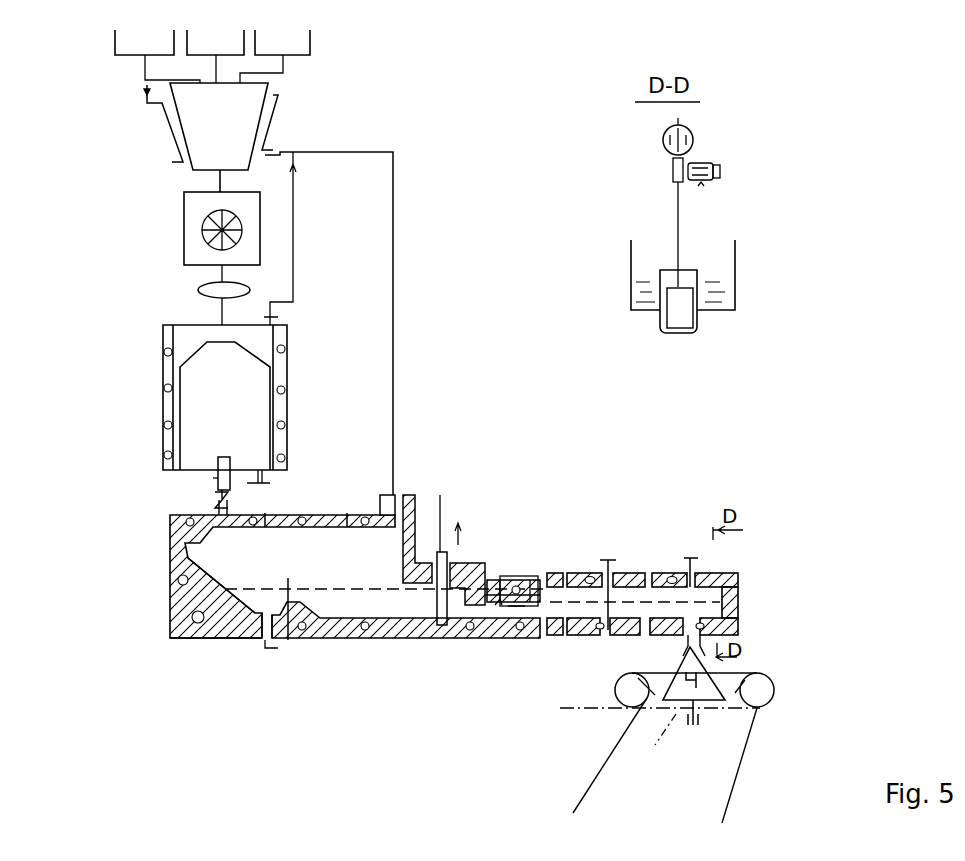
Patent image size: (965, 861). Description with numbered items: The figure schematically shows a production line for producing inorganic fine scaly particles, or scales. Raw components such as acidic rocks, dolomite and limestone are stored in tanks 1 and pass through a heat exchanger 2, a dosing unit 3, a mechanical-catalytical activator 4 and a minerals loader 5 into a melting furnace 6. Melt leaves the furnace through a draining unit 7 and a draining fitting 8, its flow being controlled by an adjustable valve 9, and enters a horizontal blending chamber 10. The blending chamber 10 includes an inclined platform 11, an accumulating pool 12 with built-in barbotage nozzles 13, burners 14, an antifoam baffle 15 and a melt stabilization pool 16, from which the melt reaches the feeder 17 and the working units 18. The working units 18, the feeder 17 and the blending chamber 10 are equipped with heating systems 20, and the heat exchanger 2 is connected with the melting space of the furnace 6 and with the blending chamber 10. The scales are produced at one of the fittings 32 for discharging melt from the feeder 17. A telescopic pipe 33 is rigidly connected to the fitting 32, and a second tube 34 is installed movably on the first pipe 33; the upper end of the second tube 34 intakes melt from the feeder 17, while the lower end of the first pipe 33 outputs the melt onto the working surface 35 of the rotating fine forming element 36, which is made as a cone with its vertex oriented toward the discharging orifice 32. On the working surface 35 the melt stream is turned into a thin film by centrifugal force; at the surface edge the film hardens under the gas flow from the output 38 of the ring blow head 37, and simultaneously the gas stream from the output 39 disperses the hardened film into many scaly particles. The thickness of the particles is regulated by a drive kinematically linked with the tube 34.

The tanks 1 is at (212, 56).
The heat exchanger 2 is at (280, 98).
The dosing unit 3 is at (195, 115).
The mechanical-catalytical activator 4 is at (193, 222).
The minerals loader 5 is at (205, 290).
The melting furnace 6 is at (190, 402).
The draining unit 7 is at (218, 480).
The draining fitting 8 is at (290, 455).
The adjustable valve 9 is at (212, 496).
The horizontal blending chamber 10 is at (200, 548).
The inclined platform 11 is at (197, 590).
The accumulating pool 12 is at (257, 607).
The barbotage nozzles 13 is at (263, 640).
The burners 14 is at (347, 515).
The antifoam baffle 15 is at (288, 620).
The melt stabilization pool 16 is at (412, 605).
The feeder 17 is at (505, 600).
The working units 18 is at (608, 628).
The heating systems 20 is at (518, 580).
The fitting for discharging the melt 32 is at (688, 638).
The telescopic pipe 33 is at (703, 280).
The second tube 34 is at (667, 290).
The working surface 35 is at (632, 712).
The fine forming element 36 is at (740, 695).
The ring blow head 37 is at (575, 707).
The output of ring blow head 38 is at (647, 698).
The output 39 is at (615, 813).